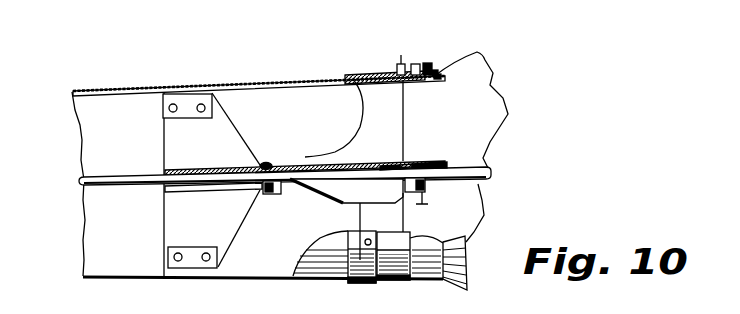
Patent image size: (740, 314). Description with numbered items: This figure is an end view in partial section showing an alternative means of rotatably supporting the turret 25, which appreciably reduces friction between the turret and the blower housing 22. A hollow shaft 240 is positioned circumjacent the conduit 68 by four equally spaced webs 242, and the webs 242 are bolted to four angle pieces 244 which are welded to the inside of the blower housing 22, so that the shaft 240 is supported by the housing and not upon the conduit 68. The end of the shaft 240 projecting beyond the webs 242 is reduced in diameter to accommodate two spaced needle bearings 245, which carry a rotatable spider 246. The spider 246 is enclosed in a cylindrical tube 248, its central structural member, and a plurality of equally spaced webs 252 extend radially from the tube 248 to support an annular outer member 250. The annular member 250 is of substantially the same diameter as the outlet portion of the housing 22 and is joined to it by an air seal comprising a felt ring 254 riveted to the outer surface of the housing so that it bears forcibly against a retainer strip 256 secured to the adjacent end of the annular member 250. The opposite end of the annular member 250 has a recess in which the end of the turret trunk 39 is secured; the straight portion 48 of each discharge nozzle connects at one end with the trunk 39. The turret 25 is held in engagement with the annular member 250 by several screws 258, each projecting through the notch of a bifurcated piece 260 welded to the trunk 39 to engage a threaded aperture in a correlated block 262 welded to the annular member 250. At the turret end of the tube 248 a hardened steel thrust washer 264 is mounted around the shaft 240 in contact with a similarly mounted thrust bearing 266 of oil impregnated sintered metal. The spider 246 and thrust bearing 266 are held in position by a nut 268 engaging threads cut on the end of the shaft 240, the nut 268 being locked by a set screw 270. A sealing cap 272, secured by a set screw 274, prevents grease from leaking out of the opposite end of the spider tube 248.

The blower housing 22 is at (108, 278).
The turret 25 is at (437, 68).
The turret trunk 39 is at (437, 75).
The straight portion 48 is at (485, 60).
The conduit 68 is at (93, 188).
The hollow shaft 240 is at (176, 167).
The webs 242 is at (186, 216).
The angle pieces 244 is at (162, 112).
The needle bearings 245 is at (390, 164).
The spider 246 is at (335, 138).
The cylindrical tube 248 is at (346, 191).
The annular outer member 250 is at (377, 77).
The webs 252 is at (395, 110).
The felt ring 254 is at (346, 79).
The retainer strip 256 is at (372, 79).
The screws 258 is at (419, 64).
The bifurcated piece 260 is at (418, 81).
The block 262 is at (402, 64).
The thrust washer 264 is at (407, 153).
The thrust bearing 266 is at (412, 160).
The nut 268 is at (383, 205).
The set screw 270 is at (432, 165).
The sealing cap 272 is at (273, 194).
The set screw 274 is at (280, 148).